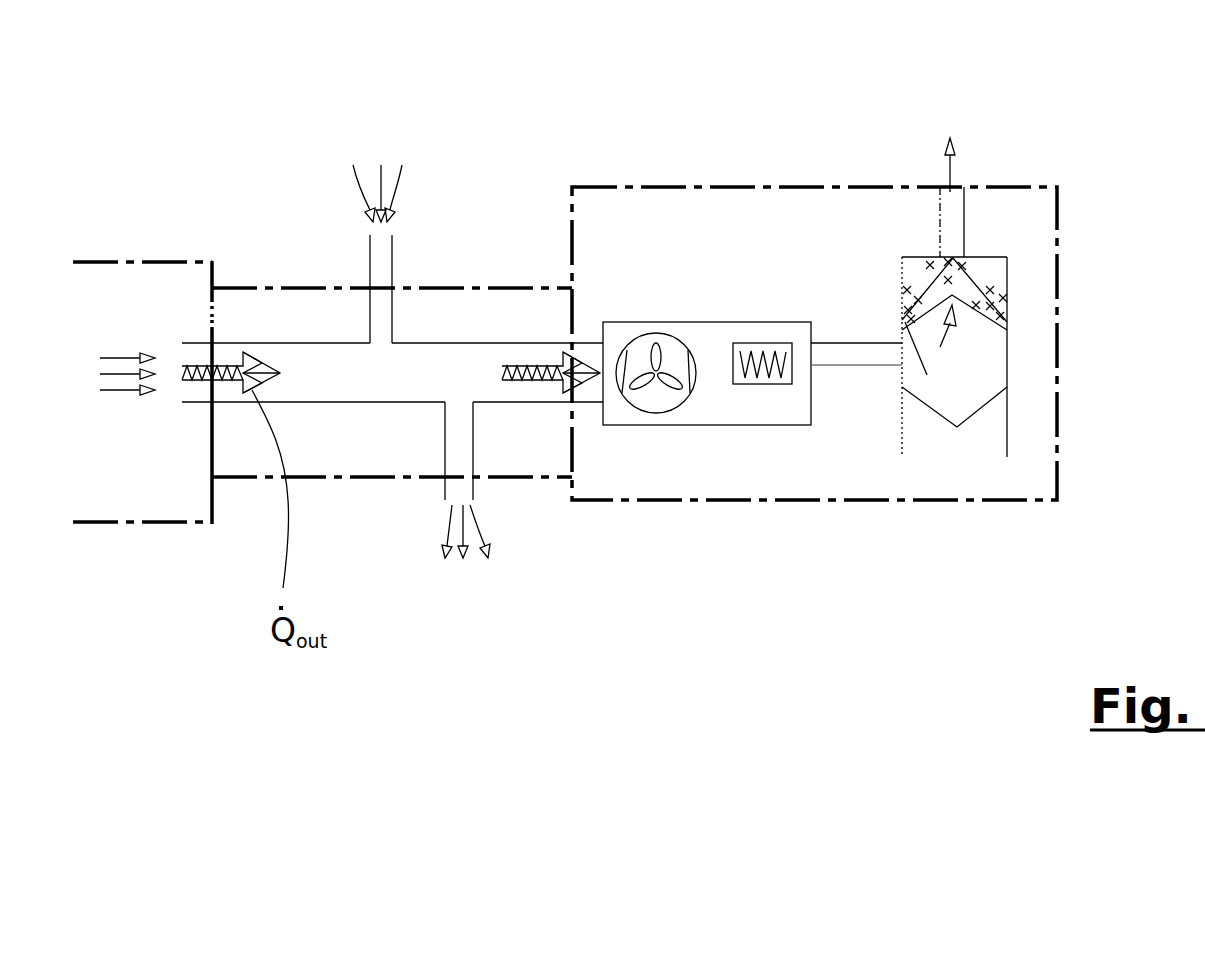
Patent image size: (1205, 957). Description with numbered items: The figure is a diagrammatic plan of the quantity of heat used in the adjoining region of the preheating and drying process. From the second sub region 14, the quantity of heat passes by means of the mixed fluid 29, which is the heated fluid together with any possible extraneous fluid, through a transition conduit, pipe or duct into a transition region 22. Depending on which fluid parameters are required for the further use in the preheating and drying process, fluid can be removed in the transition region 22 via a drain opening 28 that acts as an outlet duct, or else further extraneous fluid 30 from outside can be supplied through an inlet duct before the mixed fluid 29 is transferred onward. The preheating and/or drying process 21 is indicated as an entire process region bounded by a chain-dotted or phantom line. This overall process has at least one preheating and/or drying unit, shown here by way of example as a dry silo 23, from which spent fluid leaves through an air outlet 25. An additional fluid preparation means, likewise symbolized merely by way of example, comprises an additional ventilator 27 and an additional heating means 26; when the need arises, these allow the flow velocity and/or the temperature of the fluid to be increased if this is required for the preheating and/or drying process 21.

The second sub region 14 is at (150, 490).
The preheating and/or drying process 21 is at (803, 468).
The transition region 22 is at (375, 443).
The dry silo 23 is at (902, 307).
The air outlet 25 is at (950, 217).
The additional heating means 26 is at (768, 357).
The additional ventilator 27 is at (673, 358).
The drain opening 28 is at (463, 447).
The mixed fluid 29 is at (118, 358).
The further extraneous fluid 30 is at (372, 182).